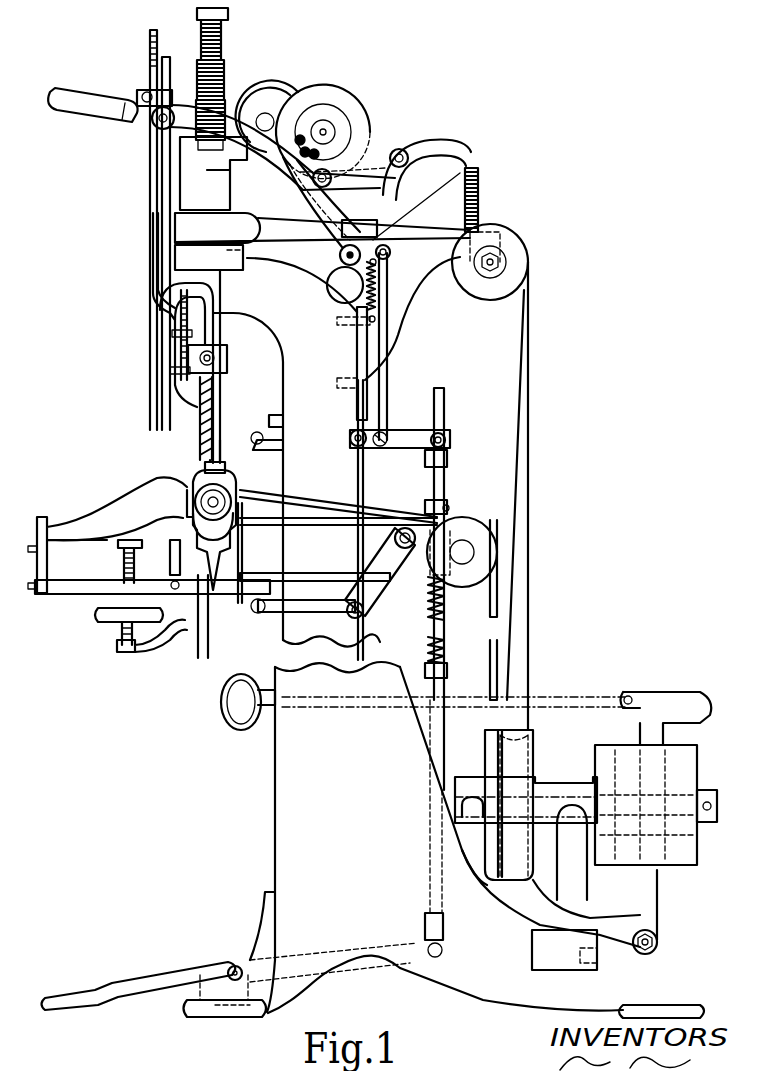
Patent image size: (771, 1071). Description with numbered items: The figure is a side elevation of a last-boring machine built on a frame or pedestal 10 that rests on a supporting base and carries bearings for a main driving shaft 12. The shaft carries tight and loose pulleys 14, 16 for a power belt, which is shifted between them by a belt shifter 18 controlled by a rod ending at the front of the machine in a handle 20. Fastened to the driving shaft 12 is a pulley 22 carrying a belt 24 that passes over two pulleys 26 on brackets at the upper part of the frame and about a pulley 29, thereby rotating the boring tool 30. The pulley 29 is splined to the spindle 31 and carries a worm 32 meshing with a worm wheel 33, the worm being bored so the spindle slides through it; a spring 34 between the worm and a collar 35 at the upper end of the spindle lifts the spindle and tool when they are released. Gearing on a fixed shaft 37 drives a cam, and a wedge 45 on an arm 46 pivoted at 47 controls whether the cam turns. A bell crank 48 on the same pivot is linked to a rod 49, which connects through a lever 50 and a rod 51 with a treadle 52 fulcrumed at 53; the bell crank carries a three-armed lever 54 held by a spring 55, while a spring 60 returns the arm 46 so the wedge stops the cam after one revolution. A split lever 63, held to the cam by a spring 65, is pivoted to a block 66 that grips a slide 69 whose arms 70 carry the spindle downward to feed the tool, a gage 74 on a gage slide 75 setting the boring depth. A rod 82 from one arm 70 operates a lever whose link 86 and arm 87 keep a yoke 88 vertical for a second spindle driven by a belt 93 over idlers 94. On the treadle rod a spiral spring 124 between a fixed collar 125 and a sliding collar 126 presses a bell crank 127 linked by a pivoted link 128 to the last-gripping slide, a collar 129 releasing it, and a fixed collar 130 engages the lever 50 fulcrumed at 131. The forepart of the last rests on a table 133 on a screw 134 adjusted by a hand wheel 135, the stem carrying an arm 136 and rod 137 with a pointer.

The frame or pedestal 10 is at (458, 665).
The main driving shaft 12 is at (717, 800).
The tight pulley 14 is at (597, 866).
The loose pulley 16 is at (697, 852).
The belt shifter 18 is at (655, 700).
The handle 20 is at (222, 712).
The pulley 22 is at (535, 755).
The belt 24 is at (530, 612).
The pulleys 26 is at (528, 262).
The pulley 29 is at (175, 222).
The boring tool 30 is at (200, 433).
The spindle 31 is at (224, 70).
The worm 32 is at (224, 100).
The worm wheel 33 is at (282, 90).
The spring 34 is at (222, 38).
The collar 35 is at (197, 15).
The shaft 37 is at (327, 130).
The wedge 45 is at (306, 146).
The arm 46 is at (290, 190).
The pivot 47 is at (350, 265).
The bell crank 48 is at (377, 230).
The rod 49 is at (390, 382).
The lever 50 is at (400, 432).
The rod 51 is at (446, 478).
The treadle 52 is at (152, 985).
The fulcrum 53 is at (234, 966).
The three-armed lever 54 is at (350, 214).
The spring 55 is at (416, 205).
The spring 60 is at (387, 287).
The split lever 63 is at (262, 120).
The spring 65 is at (480, 170).
The block 66 is at (172, 105).
The slide 69 is at (158, 262).
The arms 70 is at (182, 318).
The gage 74 is at (178, 395).
The gage slide 75 is at (162, 300).
The rod 82 is at (214, 408).
The link 86 is at (240, 580).
The arm 87 is at (220, 575).
The yoke 88 is at (170, 560).
The belt 93 is at (383, 505).
The idlers 94 is at (478, 530).
The spiral spring 124 is at (446, 605).
The fixed collar 125 is at (442, 674).
The sliding collar 126 is at (420, 590).
The bell crank 127 is at (388, 570).
The pivoted link 128 is at (305, 612).
The collar 129 is at (450, 506).
The fixed collar 130 is at (448, 456).
The fulcrum 131 is at (350, 440).
The table 133 is at (118, 528).
The screw 134 is at (165, 530).
The hand wheel 135 is at (120, 625).
The arm 136 is at (150, 652).
The rod 137 is at (198, 650).